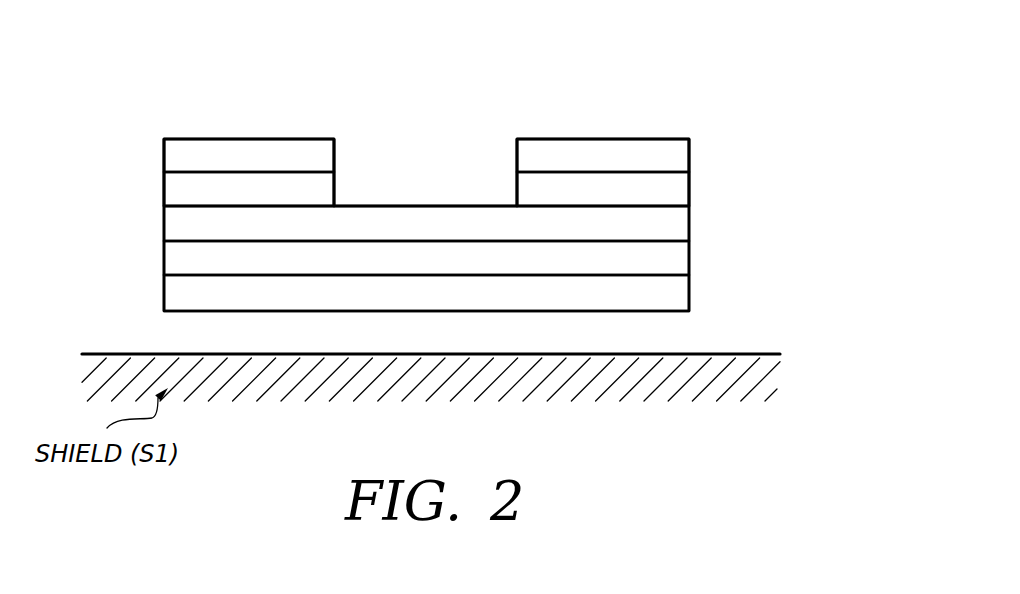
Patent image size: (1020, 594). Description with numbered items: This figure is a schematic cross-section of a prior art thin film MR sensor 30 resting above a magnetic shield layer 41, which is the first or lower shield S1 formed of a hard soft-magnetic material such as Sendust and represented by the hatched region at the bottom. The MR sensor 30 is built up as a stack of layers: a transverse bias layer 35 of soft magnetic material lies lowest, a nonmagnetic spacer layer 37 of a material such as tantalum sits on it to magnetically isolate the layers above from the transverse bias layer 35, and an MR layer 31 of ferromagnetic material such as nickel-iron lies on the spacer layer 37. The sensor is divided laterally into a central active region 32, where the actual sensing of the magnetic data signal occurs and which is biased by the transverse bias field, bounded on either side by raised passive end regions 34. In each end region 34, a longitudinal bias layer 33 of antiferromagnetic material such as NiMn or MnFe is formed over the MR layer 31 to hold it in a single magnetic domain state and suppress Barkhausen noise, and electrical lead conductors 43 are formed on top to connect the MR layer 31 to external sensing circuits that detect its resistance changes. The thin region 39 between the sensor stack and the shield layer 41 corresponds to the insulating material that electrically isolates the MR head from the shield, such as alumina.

The MR sensor 30 is at (750, 83).
The MR layer 31 is at (677, 226).
The central active region 32 is at (420, 128).
The longitudinal bias layer 33 is at (320, 190).
The passive end regions 34 is at (230, 100).
The transverse bias layer 35 is at (677, 294).
The spacer layer 37 is at (677, 260).
The gap layer 39 is at (678, 332).
The magnetic shield layer 41 is at (777, 372).
The electrical lead conductors 43 is at (320, 152).